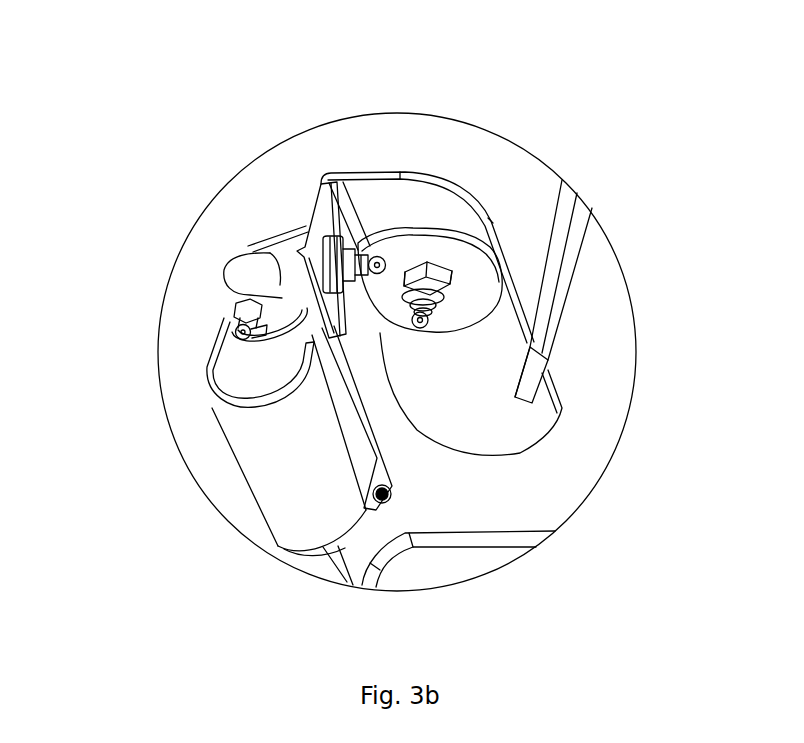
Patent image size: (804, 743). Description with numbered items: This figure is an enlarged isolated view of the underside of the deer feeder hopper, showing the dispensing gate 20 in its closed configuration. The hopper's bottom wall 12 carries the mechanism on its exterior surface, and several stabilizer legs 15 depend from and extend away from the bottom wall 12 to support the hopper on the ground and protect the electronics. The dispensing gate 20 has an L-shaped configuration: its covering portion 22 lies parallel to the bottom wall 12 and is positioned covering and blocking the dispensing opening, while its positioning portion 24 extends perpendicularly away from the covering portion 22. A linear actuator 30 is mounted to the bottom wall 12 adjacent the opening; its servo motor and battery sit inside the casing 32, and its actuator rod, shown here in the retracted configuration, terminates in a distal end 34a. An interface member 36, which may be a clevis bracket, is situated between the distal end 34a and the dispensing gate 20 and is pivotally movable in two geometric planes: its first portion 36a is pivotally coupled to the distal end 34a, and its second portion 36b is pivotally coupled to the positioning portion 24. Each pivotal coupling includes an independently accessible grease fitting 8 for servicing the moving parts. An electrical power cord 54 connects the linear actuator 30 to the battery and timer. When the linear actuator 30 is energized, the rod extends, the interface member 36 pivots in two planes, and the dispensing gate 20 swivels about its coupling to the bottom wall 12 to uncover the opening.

The grease fitting 8 is at (378, 258).
The bottom wall 12 is at (603, 413).
The stabilizer legs 15 is at (552, 313).
The dispensing gate 20 is at (477, 181).
The covering portion 22 is at (426, 204).
The positioning portion 24 is at (327, 222).
The linear actuator 30 is at (241, 468).
The casing 32 is at (277, 518).
The distal end 34a is at (223, 270).
The interface member 36 is at (279, 210).
The first portion 36a is at (305, 265).
The second portion 36b is at (292, 290).
The electrical power cord 54 is at (488, 538).